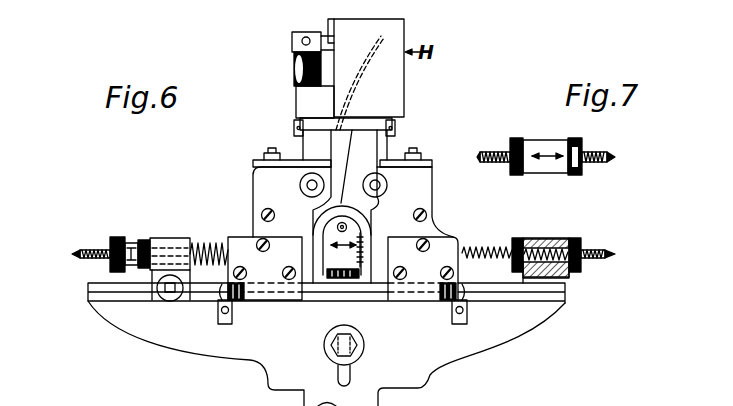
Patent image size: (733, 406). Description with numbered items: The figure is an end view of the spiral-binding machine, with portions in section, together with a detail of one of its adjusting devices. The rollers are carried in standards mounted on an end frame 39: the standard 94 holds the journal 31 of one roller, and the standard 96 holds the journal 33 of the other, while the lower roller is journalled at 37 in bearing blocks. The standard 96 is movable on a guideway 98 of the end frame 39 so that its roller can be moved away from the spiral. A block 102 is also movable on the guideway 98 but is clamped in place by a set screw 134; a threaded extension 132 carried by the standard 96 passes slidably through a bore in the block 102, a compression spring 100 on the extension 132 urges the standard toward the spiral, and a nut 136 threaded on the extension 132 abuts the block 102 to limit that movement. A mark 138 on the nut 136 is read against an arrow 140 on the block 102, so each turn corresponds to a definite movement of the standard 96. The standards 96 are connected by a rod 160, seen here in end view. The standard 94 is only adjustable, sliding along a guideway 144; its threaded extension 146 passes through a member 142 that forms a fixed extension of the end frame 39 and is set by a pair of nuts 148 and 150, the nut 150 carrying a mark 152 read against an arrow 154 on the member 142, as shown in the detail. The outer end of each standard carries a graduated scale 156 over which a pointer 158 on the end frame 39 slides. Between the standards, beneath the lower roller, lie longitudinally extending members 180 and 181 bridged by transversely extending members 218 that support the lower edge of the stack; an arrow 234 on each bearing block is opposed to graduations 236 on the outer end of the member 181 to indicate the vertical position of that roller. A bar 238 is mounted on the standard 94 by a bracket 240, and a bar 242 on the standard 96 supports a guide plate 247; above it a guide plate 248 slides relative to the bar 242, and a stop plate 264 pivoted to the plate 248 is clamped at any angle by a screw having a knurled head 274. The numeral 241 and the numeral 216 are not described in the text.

In FIG. 6, the guide plate 248 is at (333, 21).
In FIG. 6, the knurled head 274 is at (300, 54).
In FIG. 6, the bar 242 is at (308, 122).
In FIG. 6, the guide plate 247 is at (303, 130).
In FIG. 6, the fastener 241 is at (290, 158).
In FIG. 6, the standard 96 is at (267, 172).
In FIG. 6, the journal 33 is at (300, 186).
In FIG. 6, the rod 160 is at (262, 213).
In FIG. 6, the compression spring 100 is at (210, 250).
In FIG. 6, the block 102 is at (180, 242).
In FIG. 6, the arrow 140 is at (163, 253).
In FIG. 6, the mark 138 is at (128, 252).
In FIG. 6, the nut 136 is at (117, 242).
In FIG. 6, the threaded extension 132 is at (82, 248).
In FIG. 6, the guideway 98 is at (103, 295).
In FIG. 6, the set screw 134 is at (167, 300).
In FIG. 6, the pointer 158 is at (220, 322).
In FIG. 6, the graduated scale 156 is at (236, 301).
In FIG. 6, the longitudinally extending member 180 is at (320, 255).
In FIG. 6, the arrow 234 is at (345, 250).
In FIG. 6, the longitudinally extending member 181 is at (460, 325).
In FIG. 6, the graduations 236 is at (362, 290).
In FIG. 6, the lead 216 is at (385, 37).
In FIG. 6, the plate 264 is at (353, 68).
In FIG. 6, the transversely extending member 218 is at (358, 115).
In FIG. 6, the bar 238 is at (394, 128).
In FIG. 6, the bracket 240 is at (395, 152).
In FIG. 6, the journal 31 is at (388, 183).
In FIG. 6, the standard 94 is at (413, 192).
In FIG. 6, the journal 37 is at (365, 228).
In FIG. 6, the threaded extension 146 is at (480, 250).
In FIG. 6, the nut 148 is at (515, 244).
In FIG. 6, the member 142 is at (545, 242).
In FIG. 6, the nut 150 is at (580, 247).
In FIG. 6, the guideway 144 is at (540, 297).
In FIG. 6, the end frame 39 is at (517, 325).
In FIG. 7, the arrow 154 is at (547, 152).
In FIG. 7, the mark 152 is at (578, 148).